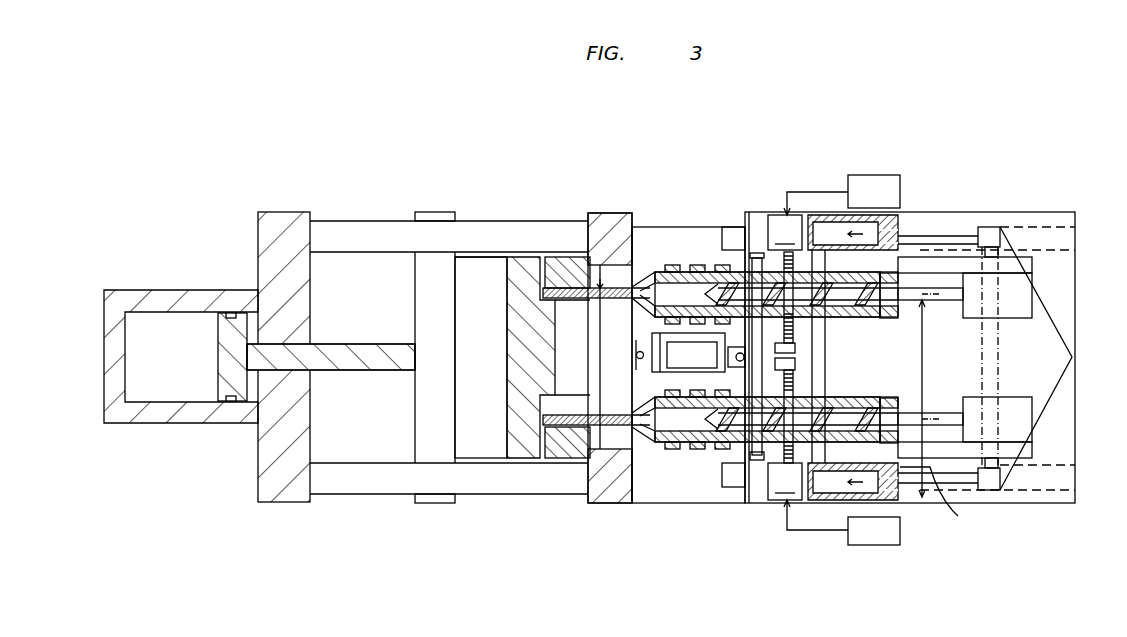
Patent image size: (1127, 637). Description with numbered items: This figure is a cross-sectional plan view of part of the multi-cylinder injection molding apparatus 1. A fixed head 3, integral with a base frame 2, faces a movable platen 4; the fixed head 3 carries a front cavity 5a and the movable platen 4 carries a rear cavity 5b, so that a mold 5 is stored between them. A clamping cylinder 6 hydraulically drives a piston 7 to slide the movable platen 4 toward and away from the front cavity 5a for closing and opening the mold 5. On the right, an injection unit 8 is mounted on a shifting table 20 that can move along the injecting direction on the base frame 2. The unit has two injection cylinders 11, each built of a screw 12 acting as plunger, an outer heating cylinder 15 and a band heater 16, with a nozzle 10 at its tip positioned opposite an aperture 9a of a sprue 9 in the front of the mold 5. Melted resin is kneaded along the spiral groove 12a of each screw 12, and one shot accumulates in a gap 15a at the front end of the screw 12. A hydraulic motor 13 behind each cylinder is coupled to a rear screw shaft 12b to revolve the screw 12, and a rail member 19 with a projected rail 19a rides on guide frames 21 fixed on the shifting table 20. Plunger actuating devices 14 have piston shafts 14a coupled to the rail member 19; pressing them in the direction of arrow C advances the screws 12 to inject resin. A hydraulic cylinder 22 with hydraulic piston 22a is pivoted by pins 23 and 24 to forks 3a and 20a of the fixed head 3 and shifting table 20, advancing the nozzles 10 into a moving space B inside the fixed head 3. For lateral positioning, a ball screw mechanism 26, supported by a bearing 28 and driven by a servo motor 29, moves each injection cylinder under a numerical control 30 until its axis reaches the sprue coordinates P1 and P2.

The injection molding apparatus 1 is at (753, 183).
The base frame 2 is at (683, 227).
The fixed head 3 is at (622, 215).
The fork 3a is at (643, 335).
The movable platen 4 is at (438, 212).
The mold 5 is at (471, 372).
The front cavity 5a is at (553, 262).
The rear cavity 5b is at (478, 258).
The clamping cylinder 6 is at (180, 290).
The piston 7 is at (218, 352).
The injection unit 8 is at (672, 483).
The sprue 9 is at (545, 292).
The aperture 9a is at (585, 296).
The nozzle 10 is at (572, 352).
The injection cylinder 11 is at (859, 273).
The screw 12 is at (842, 298).
The spiral groove 12a is at (900, 302).
The rear screw shaft 12b is at (945, 302).
The hydraulic motor 13 is at (1027, 318).
The plunger actuating device 14 is at (822, 217).
The piston shaft 14a is at (882, 213).
The heating cylinder 15 is at (655, 272).
The gap 15a is at (663, 306).
The band heater 16 is at (699, 265).
The rail member 19 is at (1065, 332).
The projected rail 19a is at (998, 362).
The shifting table 20 is at (950, 212).
The fork 20a is at (742, 362).
The guide frame 21 is at (965, 260).
The hydraulic cylinder 22 is at (648, 416).
The hydraulic piston 22a is at (662, 431).
The pin 23 is at (655, 368).
The pin 24 is at (740, 352).
The ball screw mechanism 26 is at (792, 380).
The bearing 28 is at (795, 365).
The servo motor 29 is at (785, 357).
The numerical control 30 is at (880, 175).
The moving space B is at (606, 275).
The arrow C is at (853, 357).
The coordinate P1 is at (789, 504).
The coordinate P2 is at (756, 398).